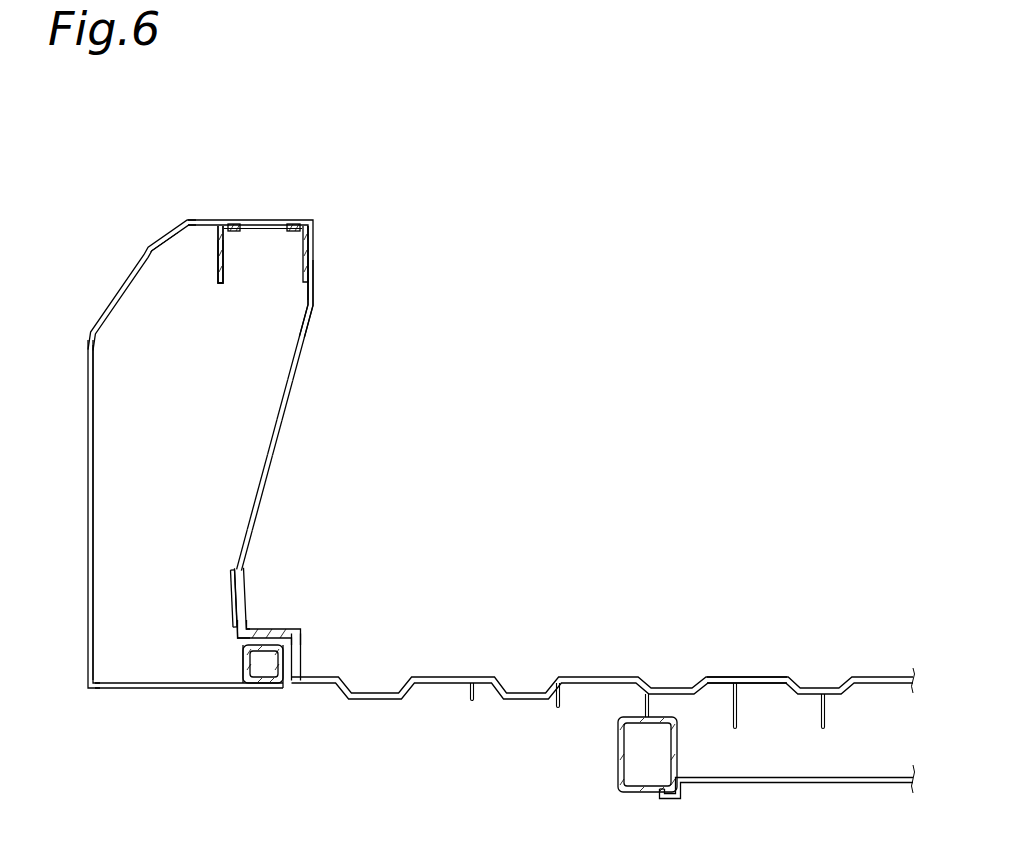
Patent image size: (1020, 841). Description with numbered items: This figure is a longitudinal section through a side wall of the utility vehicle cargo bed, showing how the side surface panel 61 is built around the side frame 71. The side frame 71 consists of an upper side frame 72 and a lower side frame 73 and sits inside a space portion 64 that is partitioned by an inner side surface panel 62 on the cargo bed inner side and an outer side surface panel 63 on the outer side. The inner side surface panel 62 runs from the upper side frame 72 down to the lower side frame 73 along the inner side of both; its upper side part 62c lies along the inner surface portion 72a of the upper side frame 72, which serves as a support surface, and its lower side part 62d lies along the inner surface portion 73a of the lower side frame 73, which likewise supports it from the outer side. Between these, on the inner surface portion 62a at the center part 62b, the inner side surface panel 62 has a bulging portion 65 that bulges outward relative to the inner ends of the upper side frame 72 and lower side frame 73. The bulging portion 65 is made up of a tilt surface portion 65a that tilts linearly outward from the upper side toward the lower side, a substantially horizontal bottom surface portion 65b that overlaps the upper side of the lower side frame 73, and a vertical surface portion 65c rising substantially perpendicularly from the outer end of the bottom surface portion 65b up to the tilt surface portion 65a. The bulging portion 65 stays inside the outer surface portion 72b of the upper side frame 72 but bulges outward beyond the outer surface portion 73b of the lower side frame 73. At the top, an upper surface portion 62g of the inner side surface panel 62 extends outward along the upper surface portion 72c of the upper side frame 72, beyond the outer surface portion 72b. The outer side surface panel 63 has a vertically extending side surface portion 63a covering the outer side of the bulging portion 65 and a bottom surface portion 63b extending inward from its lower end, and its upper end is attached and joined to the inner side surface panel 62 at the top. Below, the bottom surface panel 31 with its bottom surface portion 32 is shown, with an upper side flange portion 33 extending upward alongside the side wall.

The bottom surface panel 31 is at (603, 663).
The bottom surface portion 32 is at (747, 677).
The upper side flange portion 33 is at (230, 582).
The side surface panel 61 is at (86, 352).
The inner side surface panel 62 is at (295, 418).
The inner surface portion 62a is at (305, 363).
The center part 62b is at (275, 451).
The upper side part 62c is at (313, 270).
The lower side part 62d is at (302, 652).
The upper surface portion 62g is at (297, 220).
The outer side surface panel 63 is at (88, 429).
The side surface portion 63a is at (88, 494).
The bottom surface portion 63b is at (161, 690).
The space portion 64 is at (173, 508).
The bulging portion 65 is at (283, 427).
The tilt surface portion 65a is at (292, 398).
The bottom surface portion 65b is at (268, 633).
The vertical surface portion 65c is at (245, 580).
The side frame 71 is at (221, 297).
The upper side frame 72 is at (267, 244).
The inner surface portion 72a is at (313, 244).
The outer surface portion 72b is at (216, 268).
The upper surface portion 72c is at (237, 220).
The lower side frame 73 is at (262, 687).
The inner surface portion 73a is at (287, 681).
The outer surface portion 73b is at (242, 667).